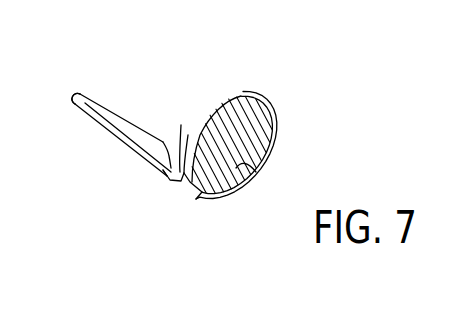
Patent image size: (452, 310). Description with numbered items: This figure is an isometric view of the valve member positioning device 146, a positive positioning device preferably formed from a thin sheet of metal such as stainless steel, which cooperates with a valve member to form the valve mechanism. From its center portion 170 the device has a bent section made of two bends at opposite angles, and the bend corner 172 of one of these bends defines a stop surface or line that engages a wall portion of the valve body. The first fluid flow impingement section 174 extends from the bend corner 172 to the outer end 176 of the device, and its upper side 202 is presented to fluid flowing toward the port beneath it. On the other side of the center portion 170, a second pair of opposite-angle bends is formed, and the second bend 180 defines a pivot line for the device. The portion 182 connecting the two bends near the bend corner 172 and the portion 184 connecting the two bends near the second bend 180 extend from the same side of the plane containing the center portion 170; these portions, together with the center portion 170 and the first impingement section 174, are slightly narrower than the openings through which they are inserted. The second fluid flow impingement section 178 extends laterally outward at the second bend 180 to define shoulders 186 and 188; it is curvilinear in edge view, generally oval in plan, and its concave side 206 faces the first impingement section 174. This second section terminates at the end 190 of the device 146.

The valve member positioning device 146 is at (80, 78).
The upper side of first fluid flow impingement section 202 is at (104, 115).
The bend corner 172 is at (163, 142).
The first fluid flow impingement section 174 is at (111, 140).
The outer end 176 is at (76, 103).
The center portion 170 is at (182, 183).
The device portion connecting the two bends near bend corner 182 is at (164, 170).
The device portion connecting the two bends near bend 184 is at (190, 186).
The shoulder 186 is at (181, 125).
The second bend 180 is at (188, 135).
The end 190 is at (258, 94).
The second fluid flow impingement section 178 is at (283, 144).
The concave side of second fluid flow impingement section 206 is at (255, 172).
The shoulder 188 is at (200, 196).